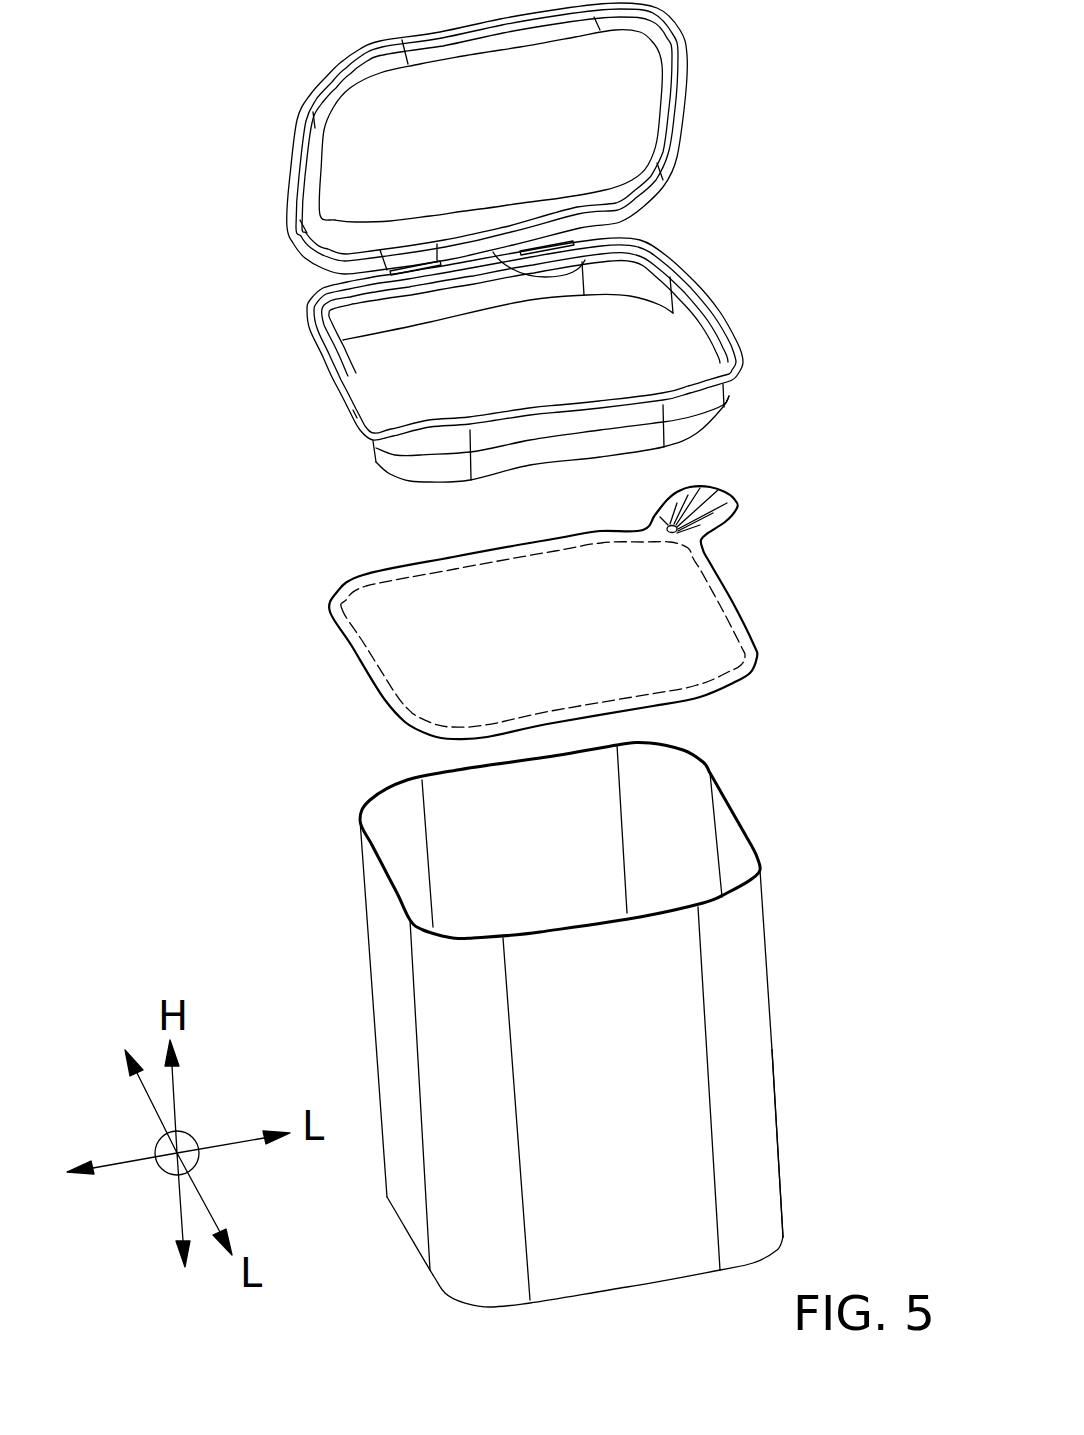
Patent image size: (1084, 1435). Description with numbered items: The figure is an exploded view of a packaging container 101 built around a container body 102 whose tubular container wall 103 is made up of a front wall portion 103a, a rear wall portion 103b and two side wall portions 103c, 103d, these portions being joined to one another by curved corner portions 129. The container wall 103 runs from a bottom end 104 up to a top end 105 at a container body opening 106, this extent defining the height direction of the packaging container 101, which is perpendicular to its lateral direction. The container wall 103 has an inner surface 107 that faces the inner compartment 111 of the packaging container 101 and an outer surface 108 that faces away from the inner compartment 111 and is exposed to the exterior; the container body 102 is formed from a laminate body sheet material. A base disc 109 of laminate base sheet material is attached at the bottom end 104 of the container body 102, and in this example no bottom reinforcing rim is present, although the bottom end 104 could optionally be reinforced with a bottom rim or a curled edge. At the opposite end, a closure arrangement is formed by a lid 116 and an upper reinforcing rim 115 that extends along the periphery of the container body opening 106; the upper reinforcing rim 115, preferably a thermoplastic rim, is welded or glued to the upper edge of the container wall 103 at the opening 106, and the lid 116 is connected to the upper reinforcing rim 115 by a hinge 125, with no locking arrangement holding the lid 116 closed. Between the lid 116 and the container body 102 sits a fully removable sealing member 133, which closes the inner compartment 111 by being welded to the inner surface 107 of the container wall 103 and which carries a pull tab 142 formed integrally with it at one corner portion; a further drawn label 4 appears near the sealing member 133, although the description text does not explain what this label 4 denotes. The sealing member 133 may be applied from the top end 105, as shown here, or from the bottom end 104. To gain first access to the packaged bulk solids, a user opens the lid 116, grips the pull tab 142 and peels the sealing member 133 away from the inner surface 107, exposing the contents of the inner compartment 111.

The packaging container 101 is at (841, 148).
The container body 102 is at (800, 1141).
The tubular container wall 103 is at (738, 968).
The front wall portion 103a is at (623, 1053).
The rear wall portion 103b is at (487, 813).
The side wall portion 103c is at (397, 992).
The side wall portion 103d is at (750, 1083).
The bottom end 104 is at (702, 1273).
The top end 105 is at (755, 843).
The container body opening 106 is at (470, 872).
The inner surface 107 is at (673, 827).
The outer surface 108 is at (560, 1093).
The base disc 109 is at (617, 1253).
The inner compartment 111 is at (557, 1005).
The upper reinforcing rim 115 is at (742, 358).
The lid 116 is at (633, 60).
The hinge 125 is at (573, 280).
The curved corner portions 129 is at (470, 1165).
The sealing member 133 is at (687, 652).
The pull tab 142 is at (733, 499).
The lidding film 4 is at (350, 652).